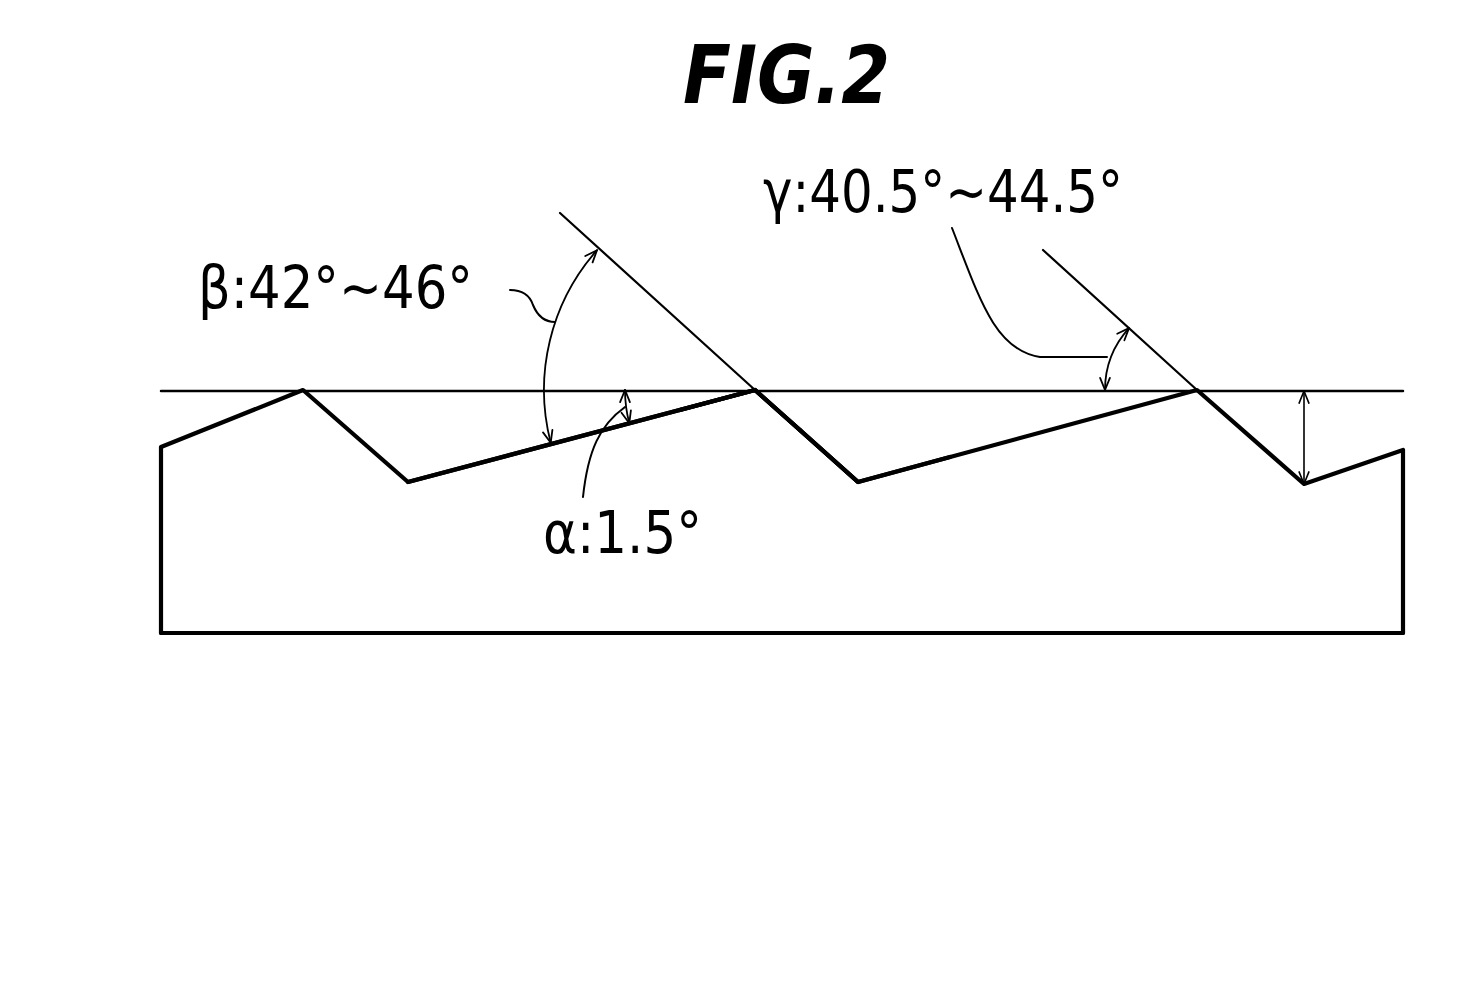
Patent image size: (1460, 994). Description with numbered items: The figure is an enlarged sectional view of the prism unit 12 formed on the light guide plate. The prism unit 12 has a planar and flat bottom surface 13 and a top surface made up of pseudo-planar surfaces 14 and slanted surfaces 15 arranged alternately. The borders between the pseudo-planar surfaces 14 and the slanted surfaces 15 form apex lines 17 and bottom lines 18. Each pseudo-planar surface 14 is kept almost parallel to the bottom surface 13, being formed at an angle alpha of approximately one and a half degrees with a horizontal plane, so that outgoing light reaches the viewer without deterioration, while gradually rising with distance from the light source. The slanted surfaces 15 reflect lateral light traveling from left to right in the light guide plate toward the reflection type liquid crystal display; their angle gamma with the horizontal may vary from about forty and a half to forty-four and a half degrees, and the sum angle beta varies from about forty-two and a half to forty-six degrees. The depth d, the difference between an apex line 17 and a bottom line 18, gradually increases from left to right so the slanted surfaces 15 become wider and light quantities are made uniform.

The prism unit 12 is at (222, 577).
The planar bottom surface 13 is at (1160, 634).
The pseudo-planar surfaces 14 is at (462, 470).
The slanted surfaces 15 is at (790, 427).
The apex lines 17 is at (757, 387).
The bottom lines 18 is at (858, 483).
The depth d is at (1307, 440).